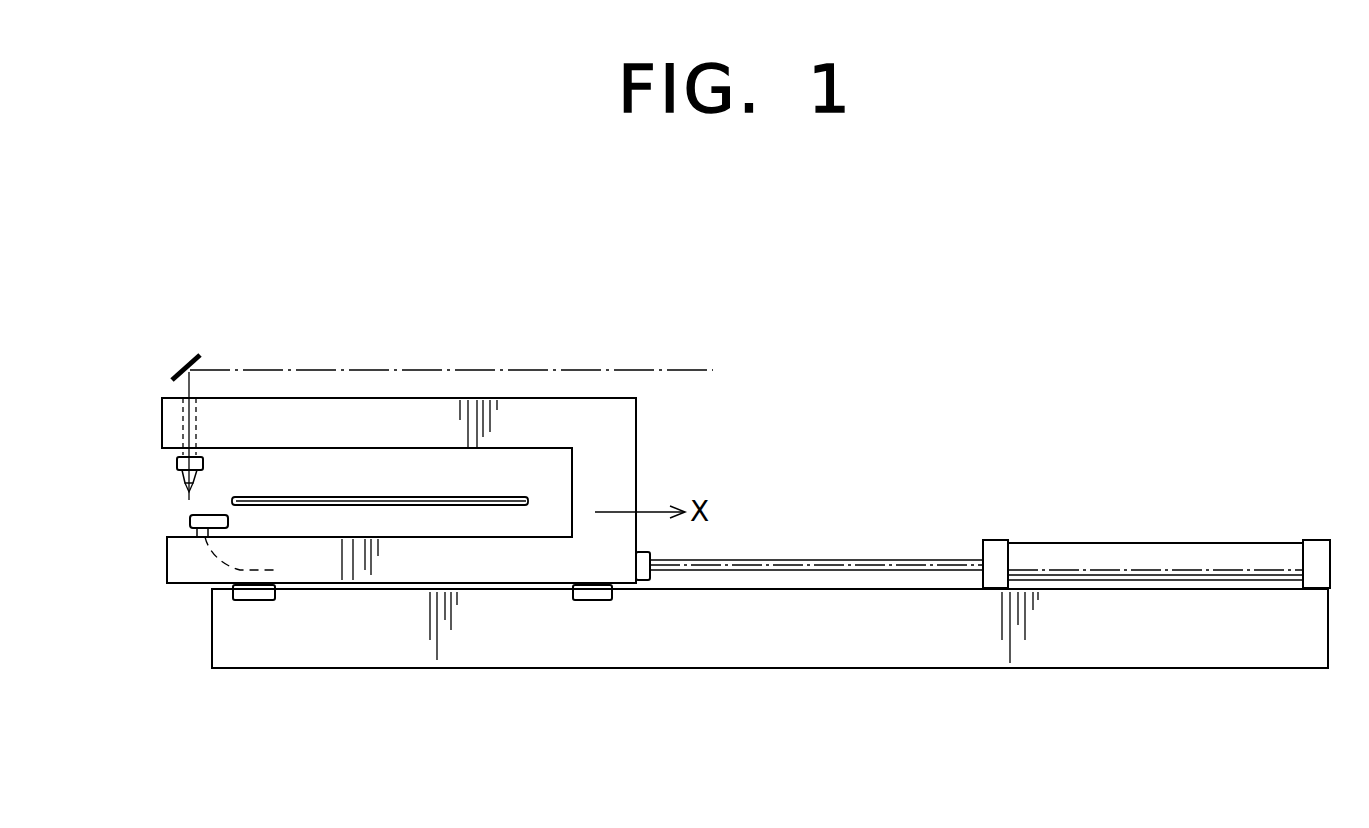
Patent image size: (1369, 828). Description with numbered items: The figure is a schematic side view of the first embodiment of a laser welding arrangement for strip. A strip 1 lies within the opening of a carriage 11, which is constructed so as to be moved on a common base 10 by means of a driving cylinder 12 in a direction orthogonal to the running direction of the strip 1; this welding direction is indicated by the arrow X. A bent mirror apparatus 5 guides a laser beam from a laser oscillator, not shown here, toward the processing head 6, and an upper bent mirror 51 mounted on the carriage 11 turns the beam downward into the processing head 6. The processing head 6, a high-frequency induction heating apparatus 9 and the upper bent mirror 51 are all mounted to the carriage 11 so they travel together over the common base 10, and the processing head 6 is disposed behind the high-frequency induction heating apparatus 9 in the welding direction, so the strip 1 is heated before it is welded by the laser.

The strip 1 is at (433, 497).
The bent mirror apparatus 5 is at (515, 370).
The processing head 6 is at (175, 463).
The high-frequency induction heating apparatus 9 is at (188, 522).
The common base 10 is at (785, 668).
The carriage 11 is at (637, 425).
The driving cylinder 12 is at (1113, 543).
The upper bent mirror 51 is at (183, 362).